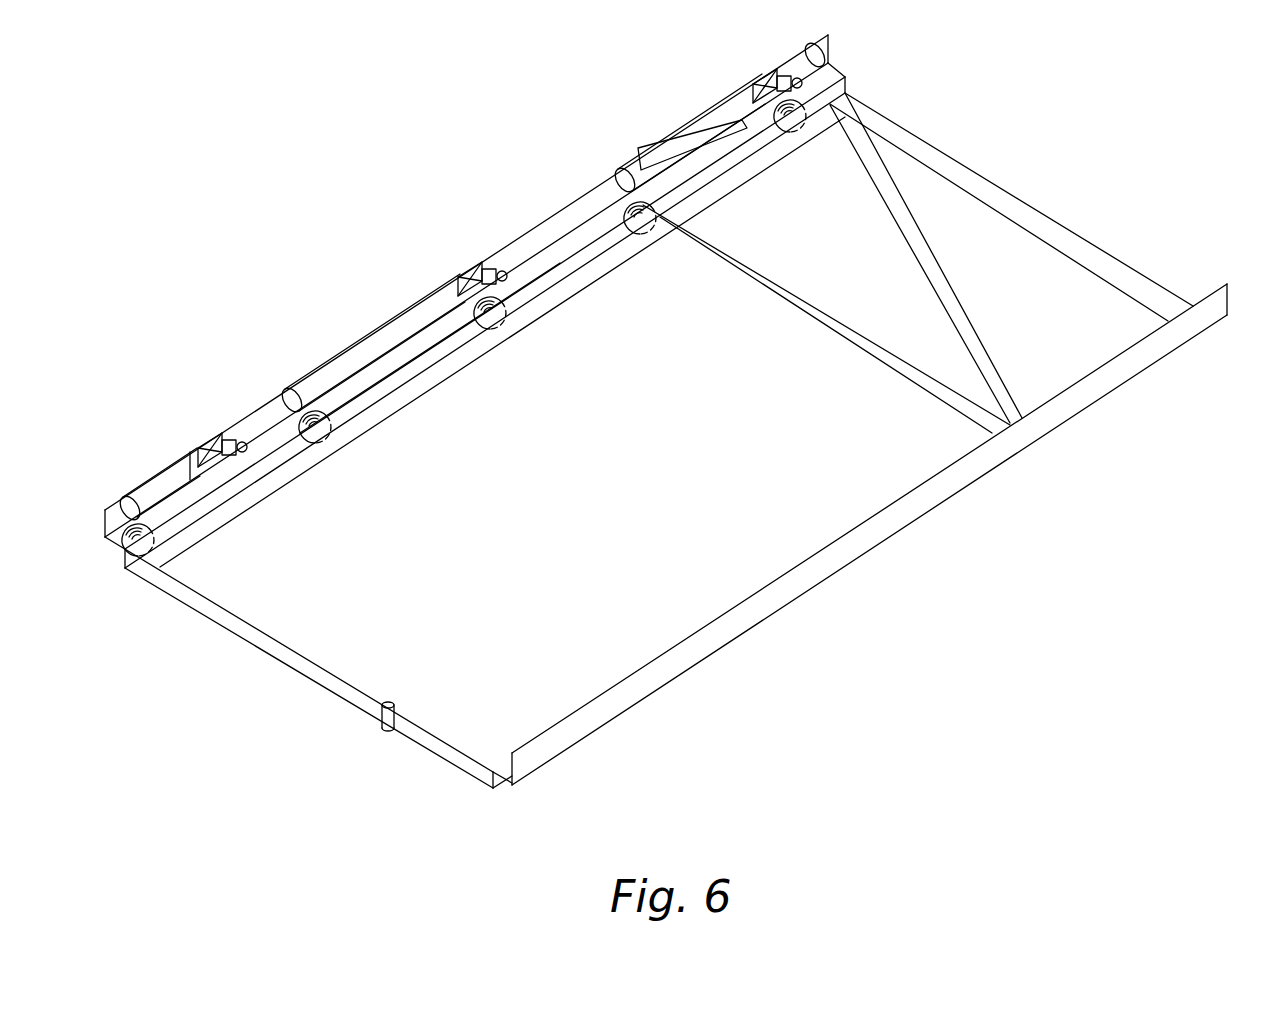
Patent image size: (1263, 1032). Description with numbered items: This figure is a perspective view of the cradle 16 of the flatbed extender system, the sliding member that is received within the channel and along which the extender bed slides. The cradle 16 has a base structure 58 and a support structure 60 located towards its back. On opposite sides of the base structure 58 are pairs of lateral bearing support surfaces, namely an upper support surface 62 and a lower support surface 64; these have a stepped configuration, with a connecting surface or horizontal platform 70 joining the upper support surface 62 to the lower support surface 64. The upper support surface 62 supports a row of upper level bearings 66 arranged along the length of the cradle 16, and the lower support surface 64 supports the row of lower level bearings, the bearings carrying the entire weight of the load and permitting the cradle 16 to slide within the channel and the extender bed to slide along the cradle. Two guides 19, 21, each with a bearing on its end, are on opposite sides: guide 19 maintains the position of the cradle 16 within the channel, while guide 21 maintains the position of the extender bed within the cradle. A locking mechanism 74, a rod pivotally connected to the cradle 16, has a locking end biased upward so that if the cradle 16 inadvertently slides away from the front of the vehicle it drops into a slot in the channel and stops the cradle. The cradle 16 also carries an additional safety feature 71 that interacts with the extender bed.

The cradle 16 is at (847, 213).
The guide 19 is at (203, 443).
The guide 21 is at (232, 441).
The base structure 58 is at (622, 600).
The support structure 60 is at (930, 255).
The upper support surface 62 is at (270, 412).
The lower support surface 64 is at (415, 375).
The upper level bearings 66 is at (625, 170).
The horizontal platform 70 is at (165, 508).
The safety feature 71 is at (385, 716).
The locking mechanism 74 is at (683, 148).